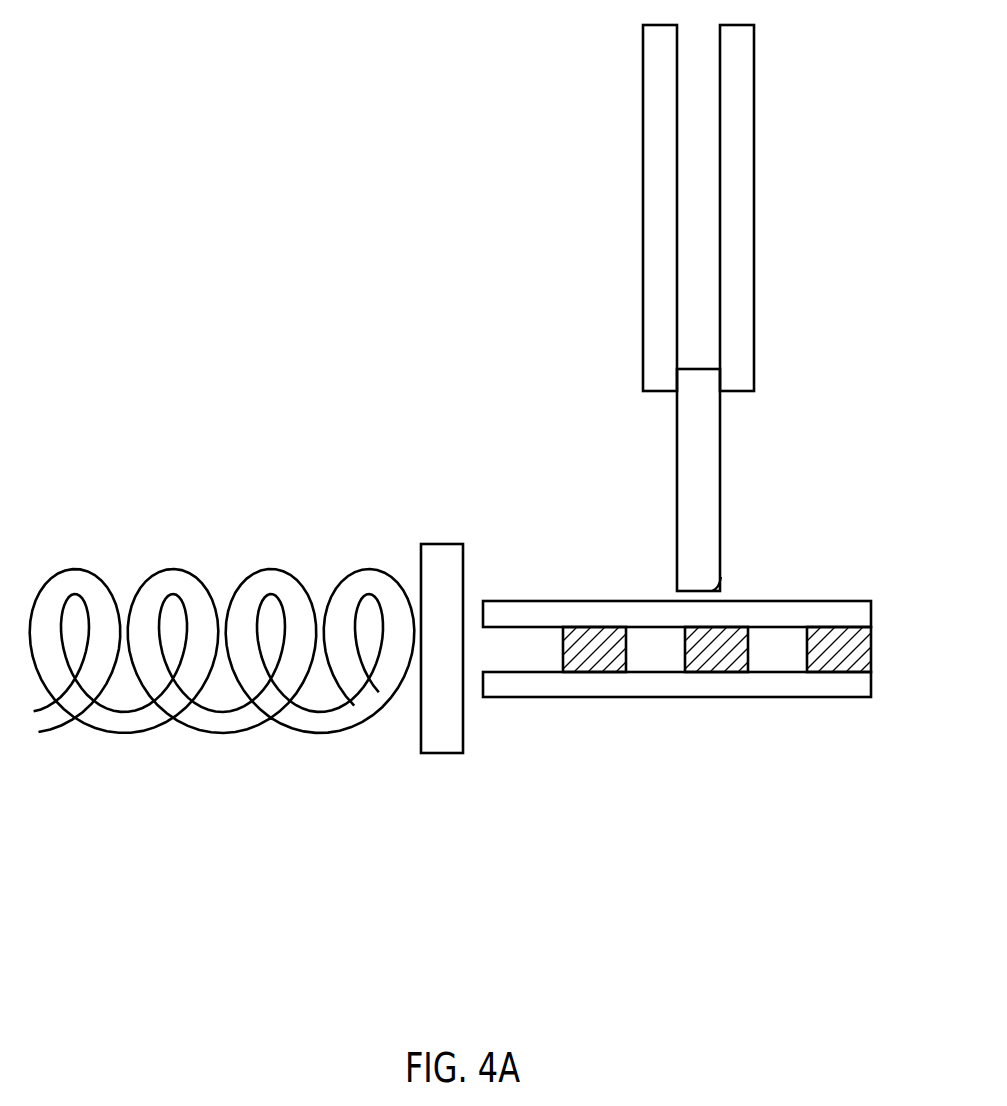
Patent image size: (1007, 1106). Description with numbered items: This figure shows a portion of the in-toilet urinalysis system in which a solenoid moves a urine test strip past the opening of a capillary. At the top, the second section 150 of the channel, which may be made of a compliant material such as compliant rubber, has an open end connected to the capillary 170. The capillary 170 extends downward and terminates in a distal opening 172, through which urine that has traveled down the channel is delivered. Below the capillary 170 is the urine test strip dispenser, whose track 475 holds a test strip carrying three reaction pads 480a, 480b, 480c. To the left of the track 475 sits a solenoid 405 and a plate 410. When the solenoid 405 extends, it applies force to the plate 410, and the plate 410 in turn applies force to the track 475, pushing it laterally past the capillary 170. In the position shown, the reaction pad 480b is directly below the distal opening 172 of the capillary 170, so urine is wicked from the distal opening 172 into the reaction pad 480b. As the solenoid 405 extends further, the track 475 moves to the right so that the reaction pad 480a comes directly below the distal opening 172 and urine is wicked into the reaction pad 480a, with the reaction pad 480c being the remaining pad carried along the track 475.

The second section of the channel 150 is at (643, 127).
The capillary 170 is at (710, 443).
The distal opening 172 is at (712, 590).
The solenoid 405 is at (229, 732).
The plate 410 is at (438, 742).
The track 475 is at (882, 593).
The reaction pad 480a is at (590, 697).
The reaction pad 480b is at (717, 697).
The reaction pad 480c is at (828, 697).